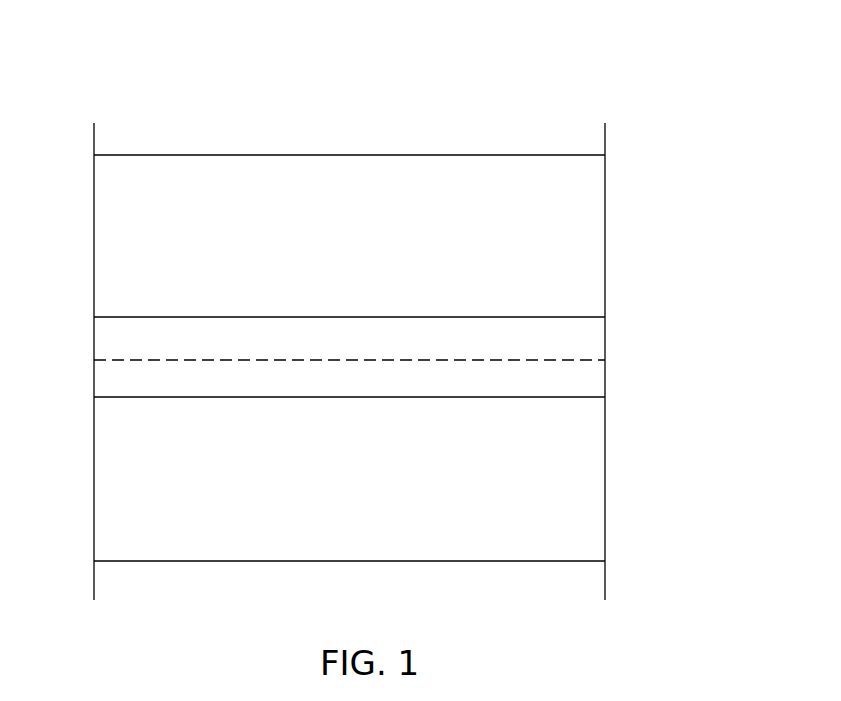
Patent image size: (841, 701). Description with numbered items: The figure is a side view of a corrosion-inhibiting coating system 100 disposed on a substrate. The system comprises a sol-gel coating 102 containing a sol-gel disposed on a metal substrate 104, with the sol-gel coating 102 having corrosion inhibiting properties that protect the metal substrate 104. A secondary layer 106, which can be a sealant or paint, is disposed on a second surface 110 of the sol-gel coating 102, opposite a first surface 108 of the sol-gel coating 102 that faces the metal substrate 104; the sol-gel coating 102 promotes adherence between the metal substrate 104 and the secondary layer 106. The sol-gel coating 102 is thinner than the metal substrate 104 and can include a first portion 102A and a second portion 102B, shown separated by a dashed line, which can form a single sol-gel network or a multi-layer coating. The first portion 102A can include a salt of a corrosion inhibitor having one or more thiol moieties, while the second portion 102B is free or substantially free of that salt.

The corrosion-inhibiting coating system 100 is at (134, 81).
The sol-gel coating 102 is at (452, 358).
The first portion 102A is at (413, 420).
The second portion 102B is at (413, 302).
The metal substrate 104 is at (590, 511).
The secondary layer 106 is at (590, 218).
The first surface 108 is at (267, 397).
The second surface 110 is at (196, 317).